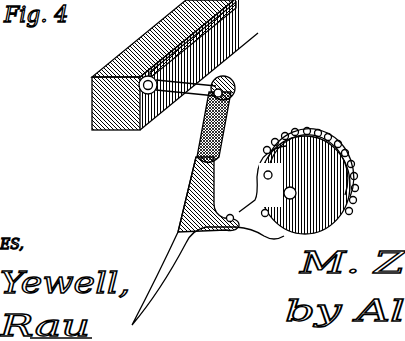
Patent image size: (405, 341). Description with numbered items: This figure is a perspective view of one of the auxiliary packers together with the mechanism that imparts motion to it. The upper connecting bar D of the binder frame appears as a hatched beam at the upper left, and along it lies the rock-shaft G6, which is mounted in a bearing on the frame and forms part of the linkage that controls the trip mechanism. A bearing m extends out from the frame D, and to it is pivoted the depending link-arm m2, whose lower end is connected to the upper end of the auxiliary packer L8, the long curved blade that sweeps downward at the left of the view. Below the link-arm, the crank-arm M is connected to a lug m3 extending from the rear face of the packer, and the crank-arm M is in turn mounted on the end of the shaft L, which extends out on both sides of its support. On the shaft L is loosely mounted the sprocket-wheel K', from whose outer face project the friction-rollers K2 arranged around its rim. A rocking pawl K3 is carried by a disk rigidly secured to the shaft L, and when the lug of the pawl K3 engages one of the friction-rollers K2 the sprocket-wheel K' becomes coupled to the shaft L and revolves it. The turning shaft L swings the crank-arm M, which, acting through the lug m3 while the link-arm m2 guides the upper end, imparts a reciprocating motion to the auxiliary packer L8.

The upper connecting bar D is at (91, 103).
The rock-shaft G6 is at (212, 43).
The bearings m is at (200, 92).
The depending link-arms m2 is at (226, 120).
The lug m3 is at (208, 229).
The crank-arm M is at (248, 224).
The auxiliary packers L8 is at (182, 232).
The sprocket-wheel K' is at (315, 180).
The friction-rollers K2 is at (273, 150).
The rocking pawl K3 is at (322, 138).
The shaft L is at (284, 193).